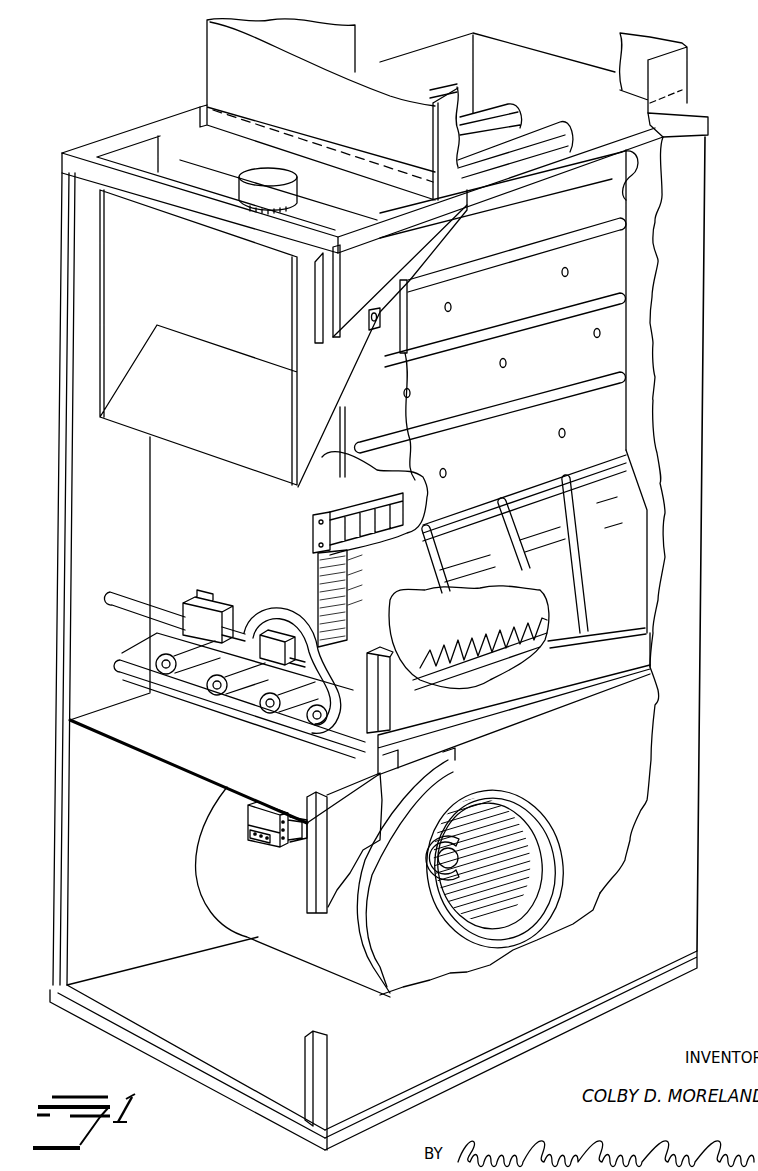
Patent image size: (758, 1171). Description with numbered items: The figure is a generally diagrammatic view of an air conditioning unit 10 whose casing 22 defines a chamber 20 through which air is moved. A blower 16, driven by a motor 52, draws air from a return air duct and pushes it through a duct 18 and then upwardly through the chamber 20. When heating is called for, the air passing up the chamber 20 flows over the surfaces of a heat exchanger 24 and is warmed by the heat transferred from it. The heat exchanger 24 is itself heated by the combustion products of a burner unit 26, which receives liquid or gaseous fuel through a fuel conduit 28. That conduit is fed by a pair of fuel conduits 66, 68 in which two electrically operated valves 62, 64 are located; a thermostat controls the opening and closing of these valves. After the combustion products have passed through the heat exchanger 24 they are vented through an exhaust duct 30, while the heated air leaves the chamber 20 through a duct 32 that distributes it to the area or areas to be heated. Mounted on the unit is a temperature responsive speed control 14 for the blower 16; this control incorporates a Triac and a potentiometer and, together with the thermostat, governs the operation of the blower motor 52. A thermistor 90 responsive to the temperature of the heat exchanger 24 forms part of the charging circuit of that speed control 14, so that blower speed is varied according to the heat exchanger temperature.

The air conditioning unit 10 is at (123, 83).
The temperature responsive speed control 14 is at (252, 836).
The blower 16 is at (447, 967).
The duct 18 is at (517, 723).
The chamber 20 is at (83, 340).
The casing 22 is at (62, 558).
The heat exchanger 24 is at (508, 446).
The burner unit 26 is at (250, 695).
The fuel conduit 28 is at (253, 717).
The exhaust duct 30 is at (287, 183).
The duct 32 is at (227, 58).
The motor 52 is at (437, 887).
The electrically operated valve 62 is at (207, 602).
The electrically operated valve 64 is at (273, 638).
The fuel conduit 66 is at (122, 612).
The fuel conduit 68 is at (246, 632).
The thermistor 90 is at (362, 513).